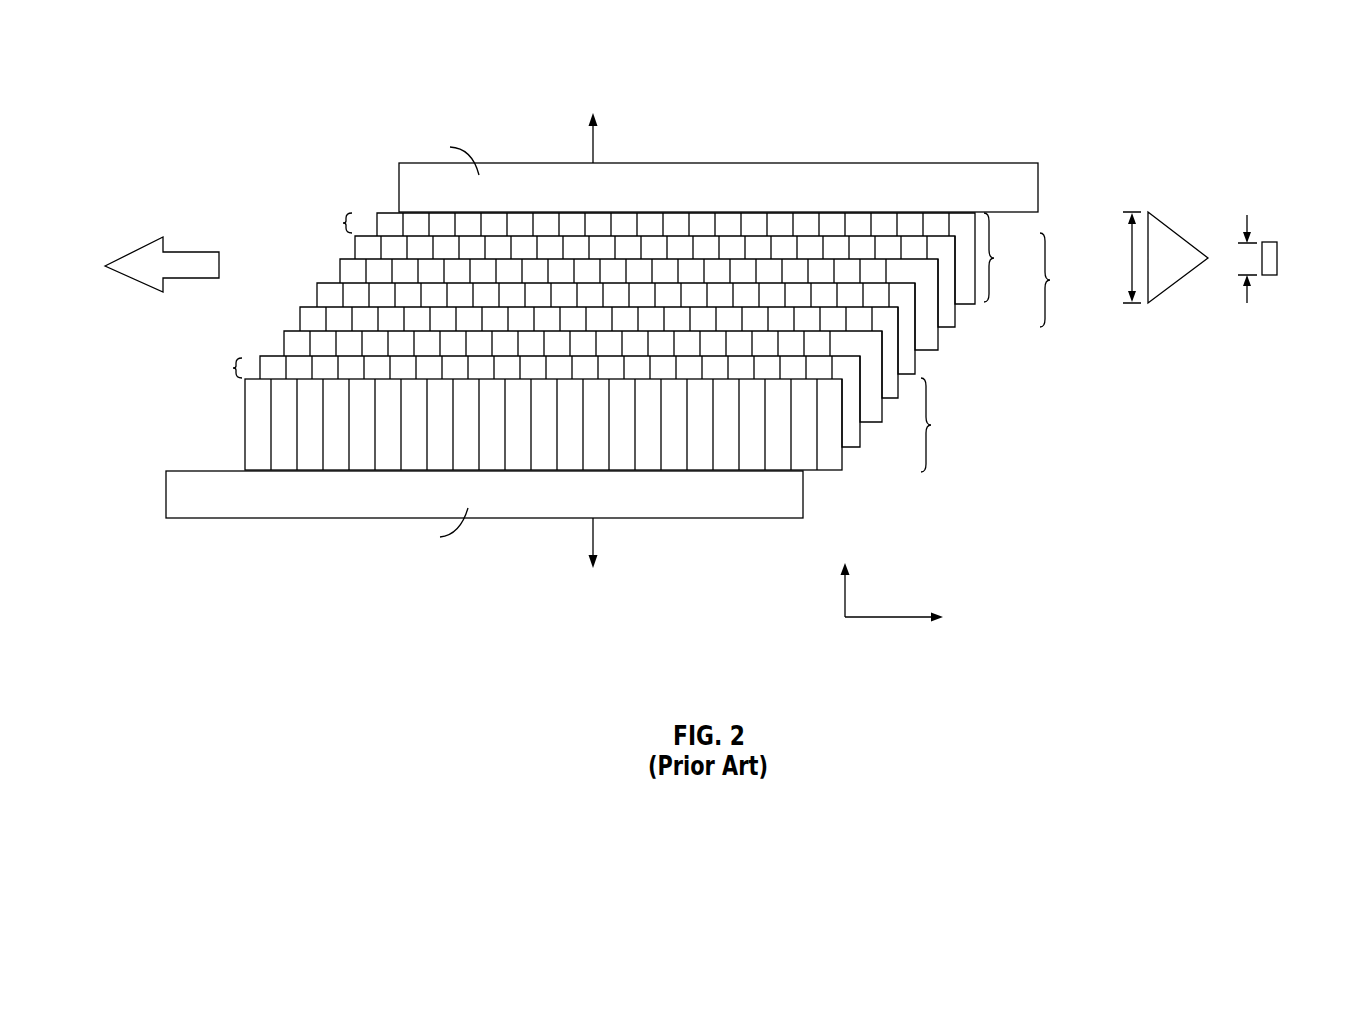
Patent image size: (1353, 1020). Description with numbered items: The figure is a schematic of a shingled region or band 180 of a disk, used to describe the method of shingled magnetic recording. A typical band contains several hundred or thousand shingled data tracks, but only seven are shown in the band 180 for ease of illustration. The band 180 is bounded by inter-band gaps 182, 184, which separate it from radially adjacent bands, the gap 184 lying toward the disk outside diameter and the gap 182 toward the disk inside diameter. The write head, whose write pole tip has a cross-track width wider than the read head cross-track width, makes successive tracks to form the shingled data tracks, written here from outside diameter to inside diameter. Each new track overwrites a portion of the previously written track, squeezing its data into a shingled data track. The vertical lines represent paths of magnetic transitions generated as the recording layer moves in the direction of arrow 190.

The shingled region or band 180 is at (320, 58).
The inter-band gap 182 is at (660, 508).
The inter-band gap 184 is at (883, 175).
The arrow 190 is at (183, 250).